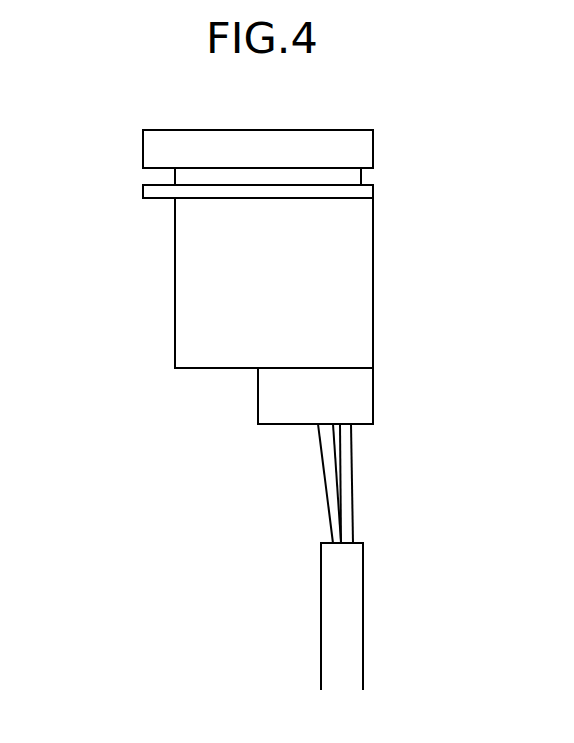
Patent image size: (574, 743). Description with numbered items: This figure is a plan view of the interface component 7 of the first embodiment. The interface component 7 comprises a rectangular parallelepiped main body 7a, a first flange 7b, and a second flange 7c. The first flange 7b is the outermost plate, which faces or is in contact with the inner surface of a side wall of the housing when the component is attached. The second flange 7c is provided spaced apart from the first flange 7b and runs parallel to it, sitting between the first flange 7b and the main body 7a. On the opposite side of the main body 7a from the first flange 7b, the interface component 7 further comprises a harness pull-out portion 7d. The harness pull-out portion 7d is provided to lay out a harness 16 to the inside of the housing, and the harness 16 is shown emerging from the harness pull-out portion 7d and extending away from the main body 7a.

The interface component 7 is at (359, 112).
The main body 7a is at (347, 278).
The first flange 7b is at (155, 150).
The second flange 7c is at (143, 192).
The harness pull-out portion 7d is at (347, 398).
The harness 16 is at (350, 607).